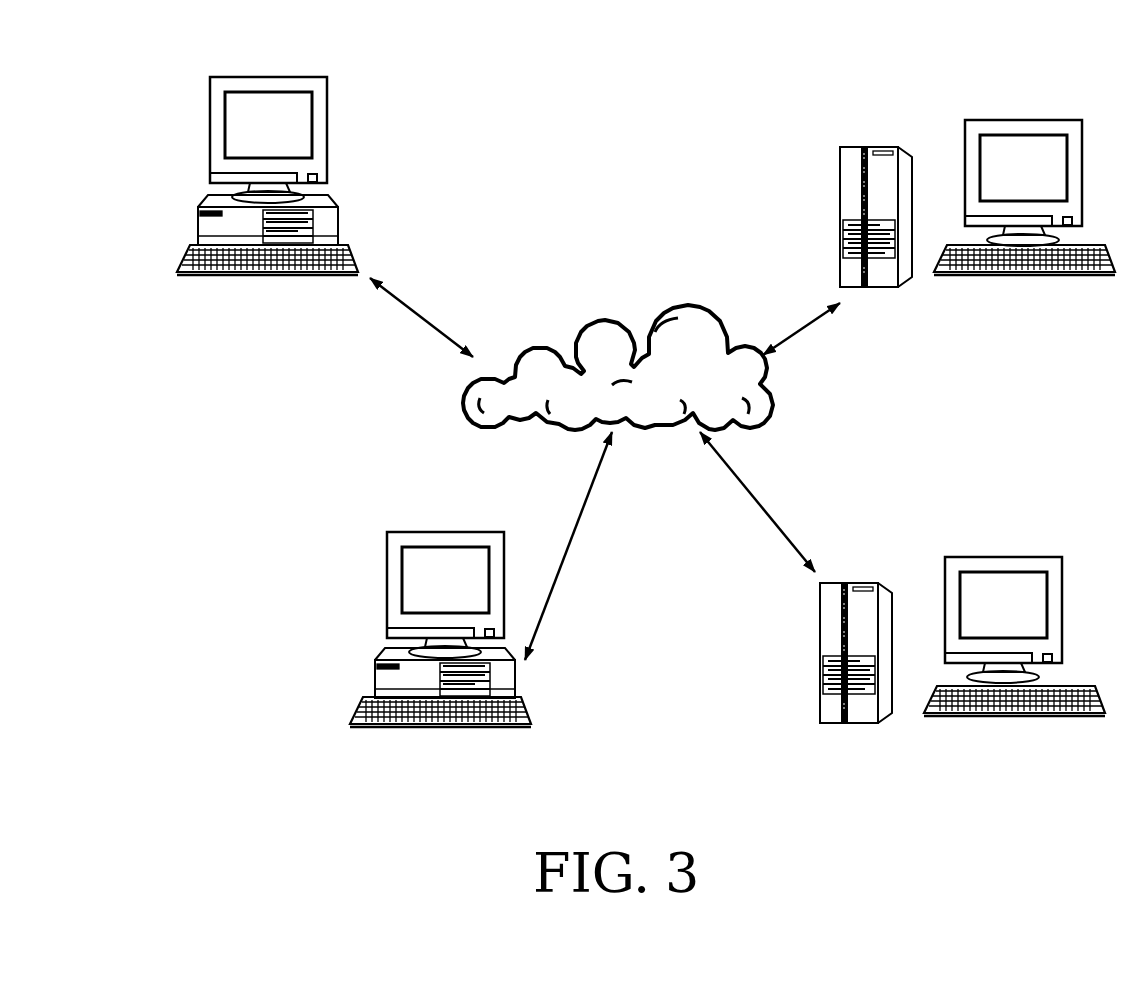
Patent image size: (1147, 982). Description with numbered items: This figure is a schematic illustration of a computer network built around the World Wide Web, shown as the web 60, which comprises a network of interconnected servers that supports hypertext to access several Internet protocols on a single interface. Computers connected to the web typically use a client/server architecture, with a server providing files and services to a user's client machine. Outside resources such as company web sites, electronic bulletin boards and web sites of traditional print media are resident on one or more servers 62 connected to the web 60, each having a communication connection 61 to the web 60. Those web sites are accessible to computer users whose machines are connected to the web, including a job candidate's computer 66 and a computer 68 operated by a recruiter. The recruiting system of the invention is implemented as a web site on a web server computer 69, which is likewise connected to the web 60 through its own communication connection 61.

The web 60 is at (615, 318).
The communication connection 61 is at (423, 320).
The server 62 is at (857, 723).
The job candidate's computer 66 is at (397, 532).
The recruiter's computer 68 is at (297, 77).
The web server computer 69 is at (845, 147).